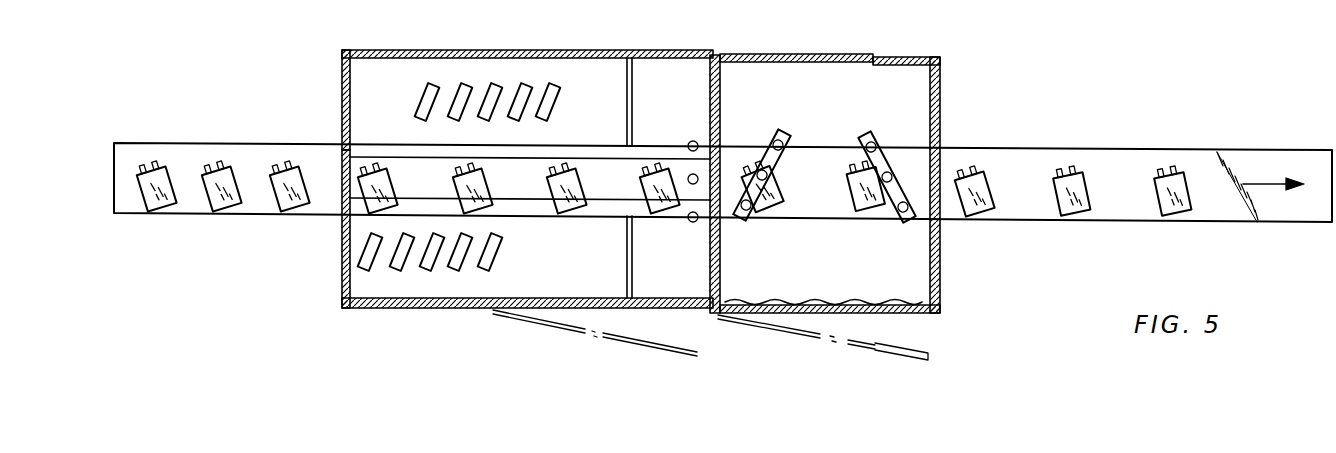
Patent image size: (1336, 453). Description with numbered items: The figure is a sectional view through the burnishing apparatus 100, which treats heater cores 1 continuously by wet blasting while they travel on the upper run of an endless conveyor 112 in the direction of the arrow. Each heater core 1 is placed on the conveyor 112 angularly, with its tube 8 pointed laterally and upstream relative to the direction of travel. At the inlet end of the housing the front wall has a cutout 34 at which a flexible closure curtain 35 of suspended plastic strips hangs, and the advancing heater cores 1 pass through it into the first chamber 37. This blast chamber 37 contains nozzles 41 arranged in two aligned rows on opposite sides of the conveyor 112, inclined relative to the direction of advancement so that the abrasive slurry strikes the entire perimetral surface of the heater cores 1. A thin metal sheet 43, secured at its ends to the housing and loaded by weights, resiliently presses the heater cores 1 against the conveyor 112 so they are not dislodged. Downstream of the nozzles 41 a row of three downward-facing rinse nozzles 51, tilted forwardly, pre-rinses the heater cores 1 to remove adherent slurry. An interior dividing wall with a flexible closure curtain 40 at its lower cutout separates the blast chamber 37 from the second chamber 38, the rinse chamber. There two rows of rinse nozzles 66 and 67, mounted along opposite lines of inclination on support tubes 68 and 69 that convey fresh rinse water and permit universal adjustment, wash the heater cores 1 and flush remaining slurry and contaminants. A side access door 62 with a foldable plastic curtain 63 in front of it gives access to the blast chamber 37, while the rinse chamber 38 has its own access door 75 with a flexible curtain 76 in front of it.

The heater core 1 is at (392, 165).
The tube 8 is at (397, 4).
The cutout 34 is at (343, 143).
The flexible closure curtain 35 is at (343, 180).
The first chamber 37 is at (617, 78).
The second chamber 38 is at (891, 100).
The flexible closure curtain 40 is at (718, 148).
The nozzles 41 is at (431, 84).
The thin metal sheet 43 is at (512, 165).
The rinse nozzles 51 is at (693, 140).
The side access door 62 is at (633, 312).
The foldable plastic curtain 63 is at (553, 298).
The rinse nozzles 66 is at (769, 161).
The rinse nozzles 67 is at (877, 161).
The support tube 68 is at (787, 135).
The support tube 69 is at (862, 130).
The access door 75 is at (870, 310).
The flexible curtain 76 is at (842, 302).
The apparatus 100 is at (666, 165).
The endless conveyor 112 is at (1257, 170).